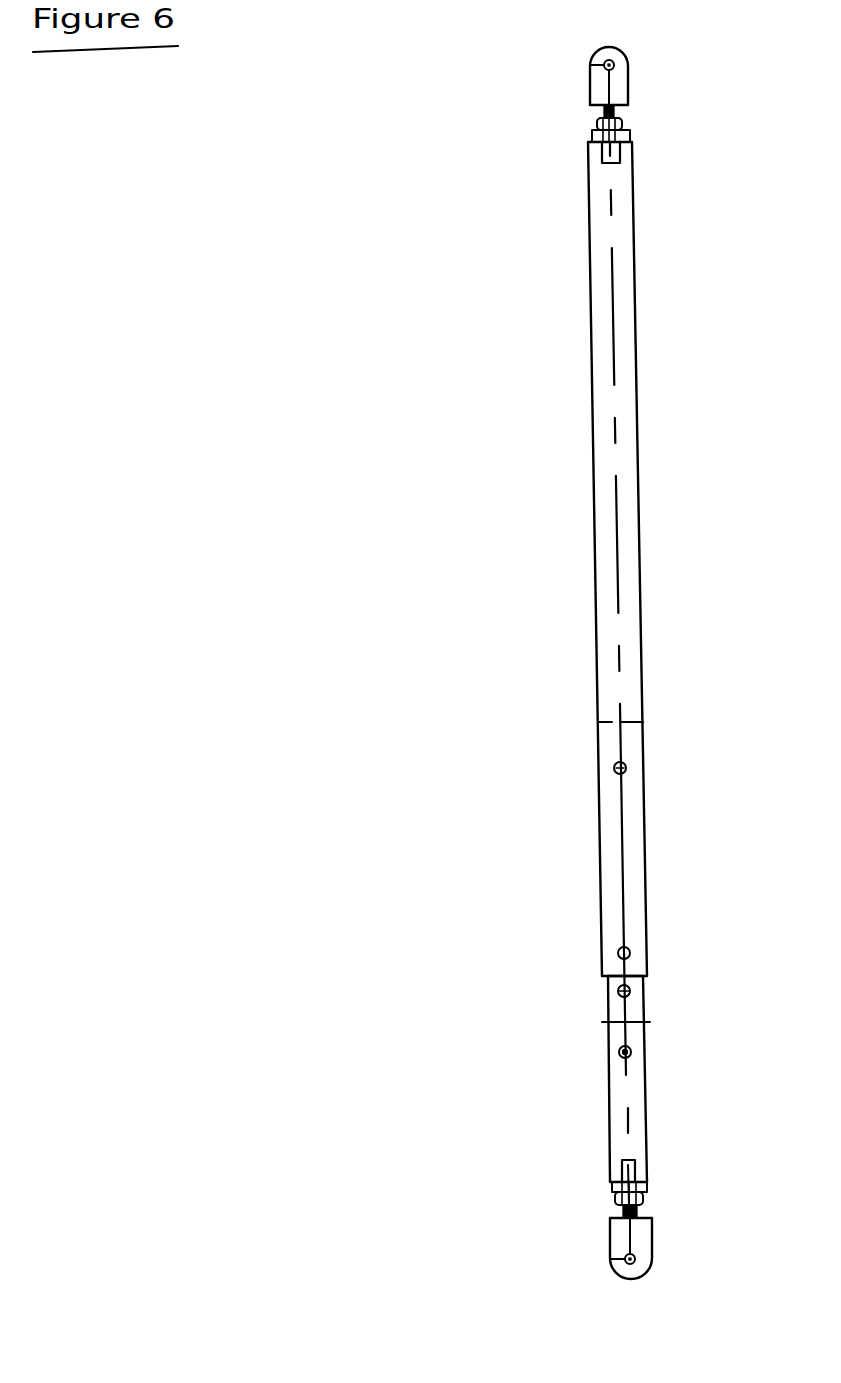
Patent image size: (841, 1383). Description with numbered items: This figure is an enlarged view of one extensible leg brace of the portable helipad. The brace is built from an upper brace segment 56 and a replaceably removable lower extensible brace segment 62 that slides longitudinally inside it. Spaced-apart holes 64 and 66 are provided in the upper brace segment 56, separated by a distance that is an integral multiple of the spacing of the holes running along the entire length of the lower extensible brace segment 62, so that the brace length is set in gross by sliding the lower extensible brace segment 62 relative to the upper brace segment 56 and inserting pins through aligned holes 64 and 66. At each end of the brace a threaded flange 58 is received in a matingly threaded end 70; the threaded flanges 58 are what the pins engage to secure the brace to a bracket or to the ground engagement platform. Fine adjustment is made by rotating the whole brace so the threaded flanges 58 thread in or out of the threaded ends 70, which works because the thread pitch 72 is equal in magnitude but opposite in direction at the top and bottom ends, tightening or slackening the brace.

The upper brace segment 56 is at (607, 403).
The threaded flange 58 is at (600, 90).
The lower extensible brace segment 62 is at (625, 1093).
The hole 64 is at (626, 769).
The hole 66 is at (630, 952).
The threaded end 70 is at (623, 127).
The thread pitch 72 is at (623, 108).